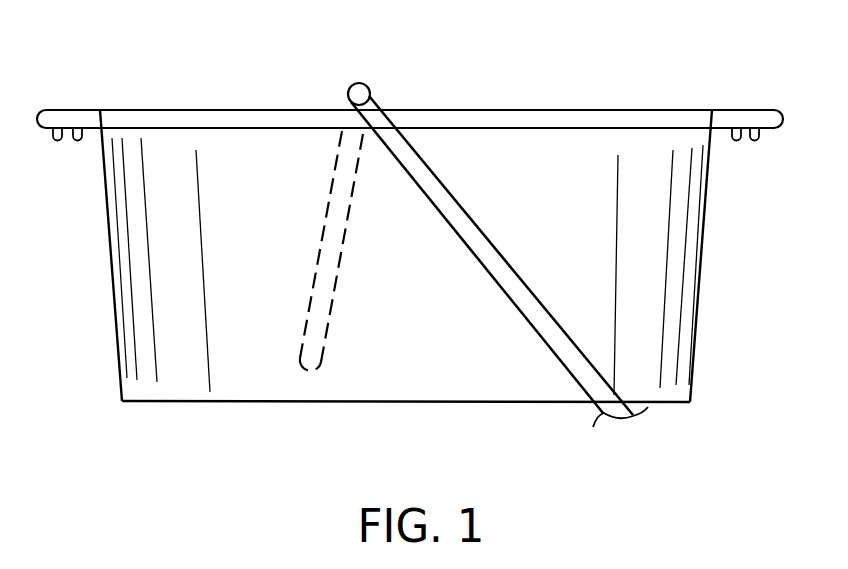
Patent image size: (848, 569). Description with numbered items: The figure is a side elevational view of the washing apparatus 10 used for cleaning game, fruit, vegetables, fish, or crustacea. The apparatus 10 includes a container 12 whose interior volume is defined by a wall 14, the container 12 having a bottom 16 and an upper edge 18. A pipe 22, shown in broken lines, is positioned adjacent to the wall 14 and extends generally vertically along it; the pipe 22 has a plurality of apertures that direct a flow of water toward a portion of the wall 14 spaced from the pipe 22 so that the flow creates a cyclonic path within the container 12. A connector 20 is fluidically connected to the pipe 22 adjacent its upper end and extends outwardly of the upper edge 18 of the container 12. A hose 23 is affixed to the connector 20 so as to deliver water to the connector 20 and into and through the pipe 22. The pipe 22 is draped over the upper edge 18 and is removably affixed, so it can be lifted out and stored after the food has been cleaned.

The apparatus 10 is at (779, 254).
The container 12 is at (670, 322).
The wall 14 is at (109, 235).
The bottom 16 is at (460, 403).
The upper edge 18 is at (583, 110).
The connector 20 is at (358, 83).
The pipe 22 is at (322, 272).
The hose 23 is at (516, 288).